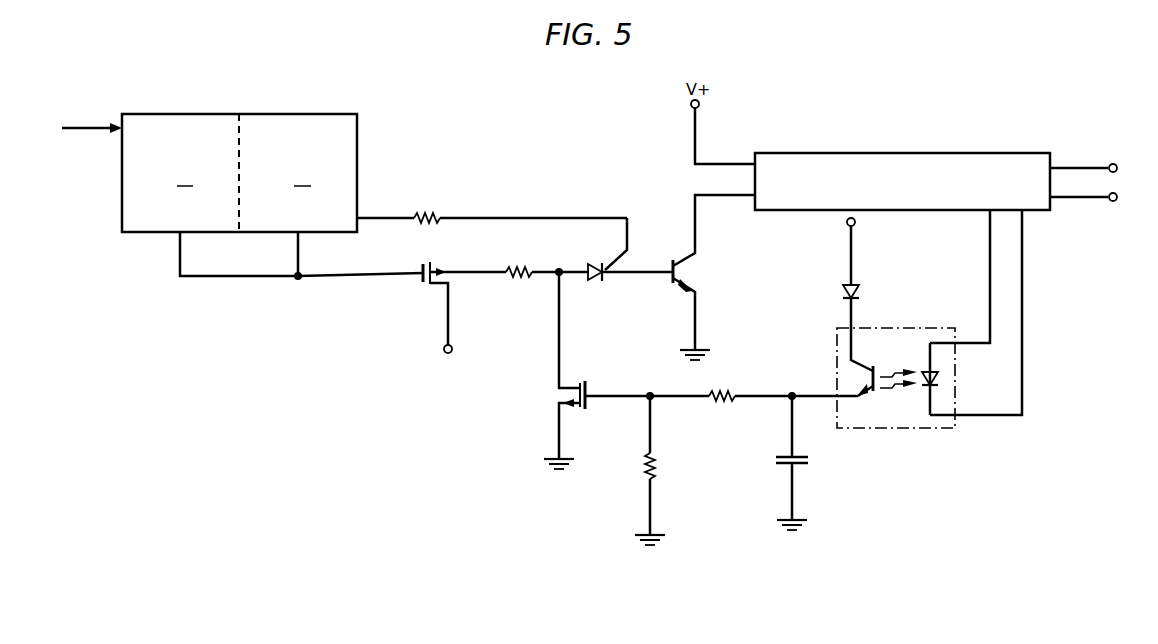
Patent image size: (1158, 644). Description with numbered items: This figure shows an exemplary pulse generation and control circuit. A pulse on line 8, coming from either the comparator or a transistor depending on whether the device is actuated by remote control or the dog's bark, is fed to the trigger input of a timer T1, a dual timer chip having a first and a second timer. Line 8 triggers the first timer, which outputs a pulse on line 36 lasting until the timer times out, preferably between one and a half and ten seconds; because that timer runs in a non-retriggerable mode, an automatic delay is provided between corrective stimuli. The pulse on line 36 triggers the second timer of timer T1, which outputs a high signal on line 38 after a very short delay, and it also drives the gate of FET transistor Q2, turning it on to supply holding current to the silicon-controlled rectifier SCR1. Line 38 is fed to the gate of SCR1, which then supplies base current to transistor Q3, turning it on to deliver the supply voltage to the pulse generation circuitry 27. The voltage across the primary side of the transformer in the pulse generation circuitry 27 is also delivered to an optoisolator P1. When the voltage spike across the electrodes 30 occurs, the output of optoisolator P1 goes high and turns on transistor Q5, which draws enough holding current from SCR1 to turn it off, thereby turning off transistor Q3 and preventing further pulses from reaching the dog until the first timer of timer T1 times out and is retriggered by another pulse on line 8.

The line 8 is at (88, 116).
The timer T1 is at (366, 127).
The line 36 is at (318, 276).
The line 38 is at (497, 218).
The FET transistor Q2 is at (464, 311).
The silicon-controlled rectifier SCR1 is at (625, 262).
The transistor Q3 is at (714, 277).
The pulse generation circuitry 27 is at (912, 193).
The electrodes 30 is at (1128, 182).
The optoisolator P1 is at (903, 328).
The transistor Q5 is at (592, 370).